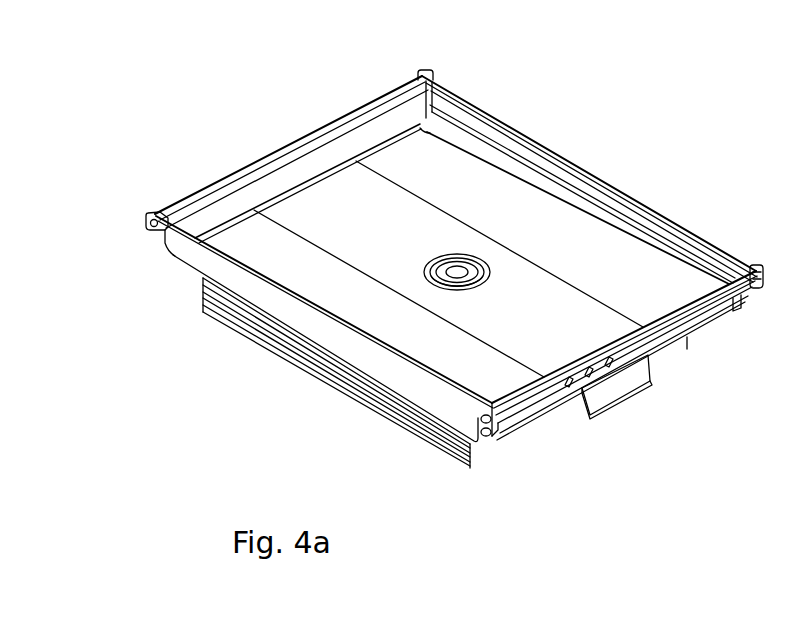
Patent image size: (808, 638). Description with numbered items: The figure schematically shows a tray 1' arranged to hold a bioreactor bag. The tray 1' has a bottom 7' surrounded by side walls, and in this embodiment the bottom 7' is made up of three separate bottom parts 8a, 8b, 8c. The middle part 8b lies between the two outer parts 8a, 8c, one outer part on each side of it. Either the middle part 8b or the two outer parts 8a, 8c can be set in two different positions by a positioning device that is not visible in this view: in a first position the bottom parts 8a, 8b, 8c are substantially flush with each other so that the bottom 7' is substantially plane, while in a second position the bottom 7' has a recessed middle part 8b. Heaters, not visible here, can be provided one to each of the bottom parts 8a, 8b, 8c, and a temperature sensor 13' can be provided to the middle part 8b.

The tray 1' is at (454, 234).
The bottom 7' is at (605, 177).
The outer part 8a is at (287, 272).
The middle part 8b is at (300, 207).
The outer part 8c is at (485, 185).
The temperature sensor 13' is at (479, 422).